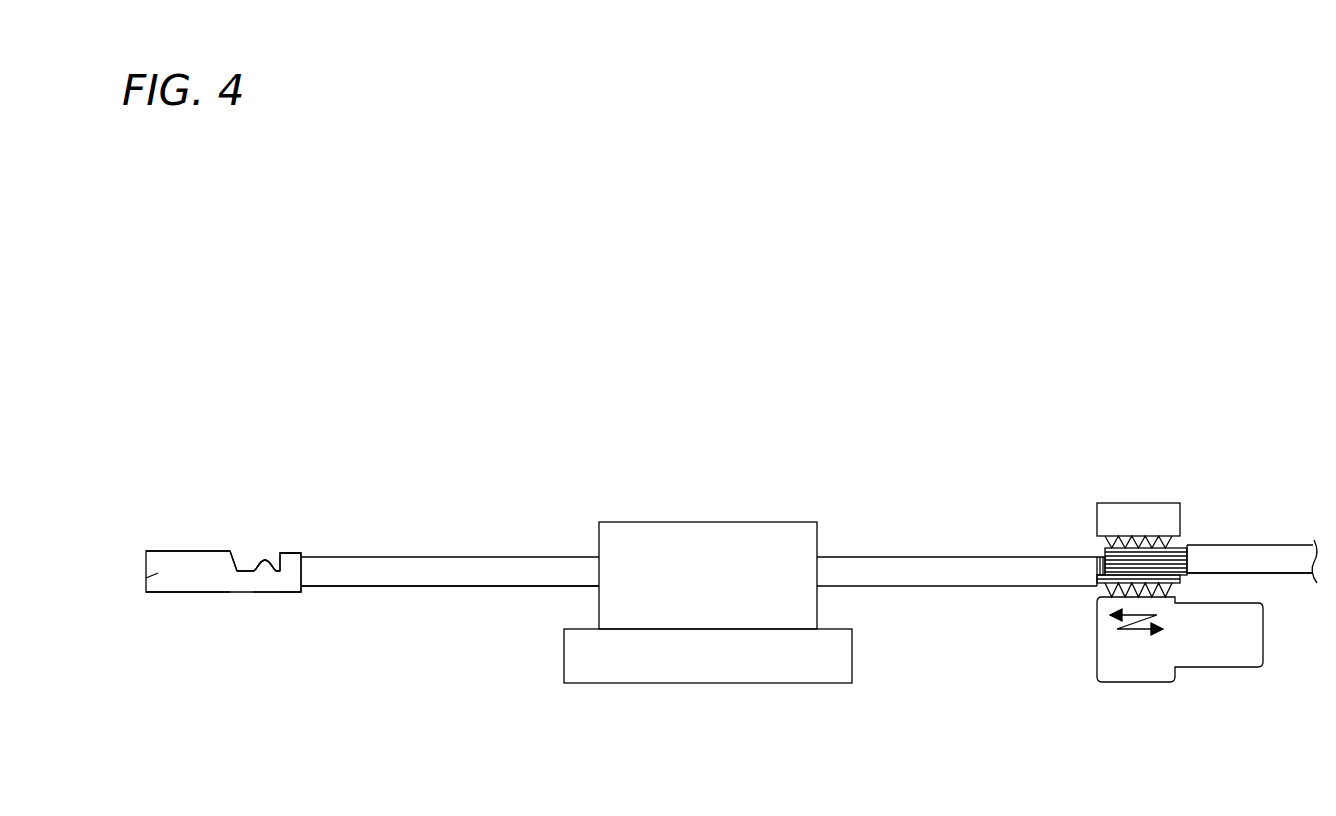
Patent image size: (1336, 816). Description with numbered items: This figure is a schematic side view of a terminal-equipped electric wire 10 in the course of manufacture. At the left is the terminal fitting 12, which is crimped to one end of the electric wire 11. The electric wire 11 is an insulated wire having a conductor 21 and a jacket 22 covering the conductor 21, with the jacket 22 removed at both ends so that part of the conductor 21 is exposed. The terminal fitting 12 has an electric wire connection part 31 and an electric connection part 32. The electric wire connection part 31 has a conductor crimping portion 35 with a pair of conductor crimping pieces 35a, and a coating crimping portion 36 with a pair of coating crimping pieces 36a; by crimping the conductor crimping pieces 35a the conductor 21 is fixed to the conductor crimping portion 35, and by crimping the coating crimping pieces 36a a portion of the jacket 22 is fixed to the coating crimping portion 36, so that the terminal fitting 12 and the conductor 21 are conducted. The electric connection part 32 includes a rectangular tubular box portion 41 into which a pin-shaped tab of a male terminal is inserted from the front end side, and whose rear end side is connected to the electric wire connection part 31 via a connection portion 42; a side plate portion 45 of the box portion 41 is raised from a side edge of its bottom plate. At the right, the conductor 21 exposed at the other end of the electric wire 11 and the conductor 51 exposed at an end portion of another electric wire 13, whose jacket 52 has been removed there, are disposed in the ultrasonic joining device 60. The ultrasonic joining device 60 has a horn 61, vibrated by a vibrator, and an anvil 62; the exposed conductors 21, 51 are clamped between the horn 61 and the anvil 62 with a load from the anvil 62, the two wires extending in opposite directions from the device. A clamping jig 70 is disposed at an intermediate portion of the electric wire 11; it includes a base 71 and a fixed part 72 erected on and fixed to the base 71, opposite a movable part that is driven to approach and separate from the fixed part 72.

The terminal-equipped electric wire 10 is at (498, 557).
The electric wire 11 is at (482, 587).
The terminal fitting 12 is at (210, 537).
The electric wire 13 is at (1273, 545).
The conductor 21 is at (1102, 553).
The jacket 22 is at (958, 563).
The electric wire connection part 31 is at (275, 593).
The electric connection part 32 is at (177, 593).
The conductor crimping portion 35 is at (262, 578).
The conductor crimping pieces 35a is at (257, 555).
The coating crimping portion 36 is at (290, 573).
The coating crimping pieces 36a is at (293, 555).
The box portion 41 is at (170, 550).
The connection portion 42 is at (238, 583).
The side plate portion 45 is at (146, 578).
The conductor 51 is at (1183, 547).
The jacket 52 is at (1283, 567).
The ultrasonic joining device 60 is at (1143, 566).
The horn 61 is at (1102, 650).
The anvil 62 is at (1122, 508).
The clamping jig 70 is at (752, 537).
The base 71 is at (848, 653).
The fixed part 72 is at (722, 530).